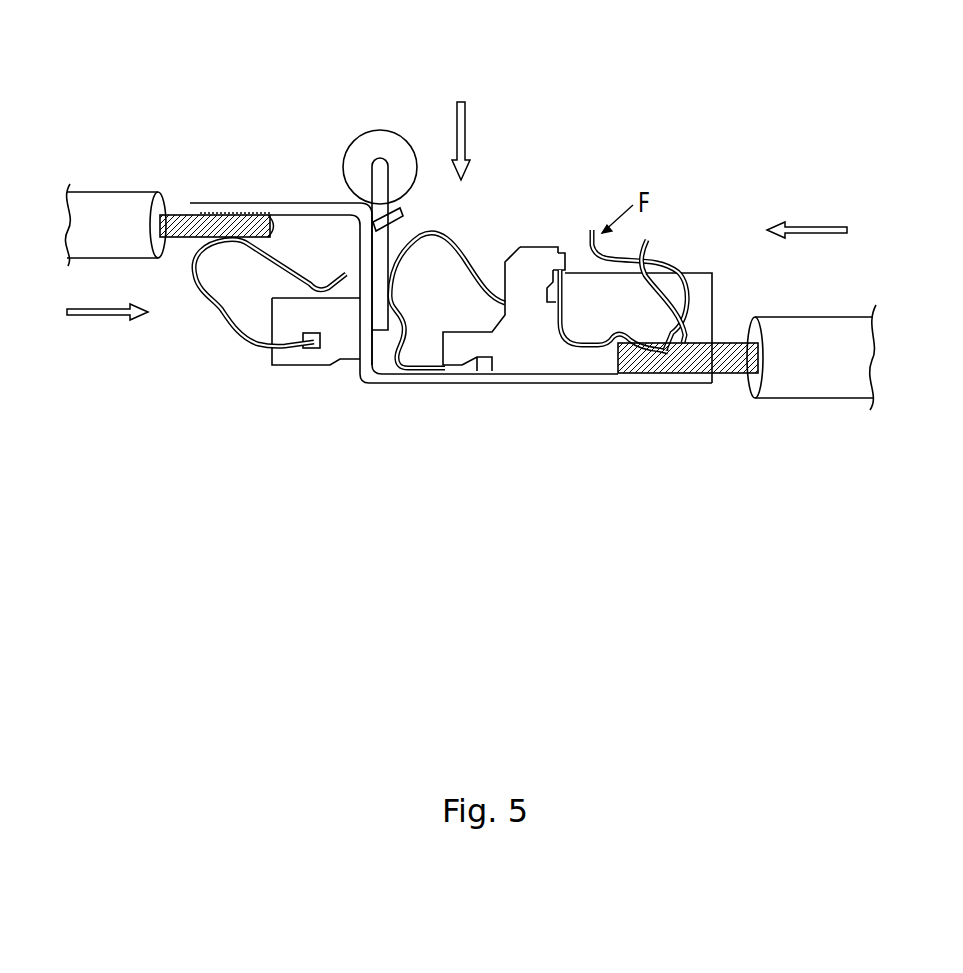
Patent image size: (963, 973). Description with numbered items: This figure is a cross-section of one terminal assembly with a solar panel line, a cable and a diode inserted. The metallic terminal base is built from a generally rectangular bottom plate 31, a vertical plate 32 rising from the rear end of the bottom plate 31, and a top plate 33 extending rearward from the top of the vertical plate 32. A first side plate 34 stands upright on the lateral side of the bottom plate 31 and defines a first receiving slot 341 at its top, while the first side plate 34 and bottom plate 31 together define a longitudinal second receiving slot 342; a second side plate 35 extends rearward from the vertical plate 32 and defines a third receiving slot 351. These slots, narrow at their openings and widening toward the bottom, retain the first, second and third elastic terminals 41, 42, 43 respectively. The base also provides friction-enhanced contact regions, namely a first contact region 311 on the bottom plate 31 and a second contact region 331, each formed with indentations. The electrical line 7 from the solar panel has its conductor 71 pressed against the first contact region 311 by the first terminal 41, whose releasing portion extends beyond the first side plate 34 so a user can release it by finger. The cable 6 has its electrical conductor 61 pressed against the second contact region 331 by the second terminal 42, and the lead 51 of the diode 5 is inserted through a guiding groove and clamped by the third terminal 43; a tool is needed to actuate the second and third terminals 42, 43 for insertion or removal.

The diode 5 is at (365, 135).
The lead of the diode 51 is at (378, 250).
The cable 6 is at (100, 200).
The electrical conductor of the cable 61 is at (180, 238).
The electrical line 7 is at (850, 378).
The electrical conductor of the electrical line 71 is at (738, 372).
The bottom plate 31 is at (582, 378).
The first contact region 311 is at (672, 383).
The vertical plate 32 is at (365, 263).
The top plate 33 is at (205, 203).
The second contact region 331 is at (268, 212).
The first side plate 34 is at (518, 268).
The first receiving slot 341 is at (548, 277).
The second receiving slot 342 is at (478, 372).
The second side plate 35 is at (328, 360).
The third receiving slot 351 is at (303, 345).
The first elastic terminal 41 is at (663, 262).
The second elastic terminal 42 is at (230, 323).
The third elastic terminal 43 is at (438, 232).